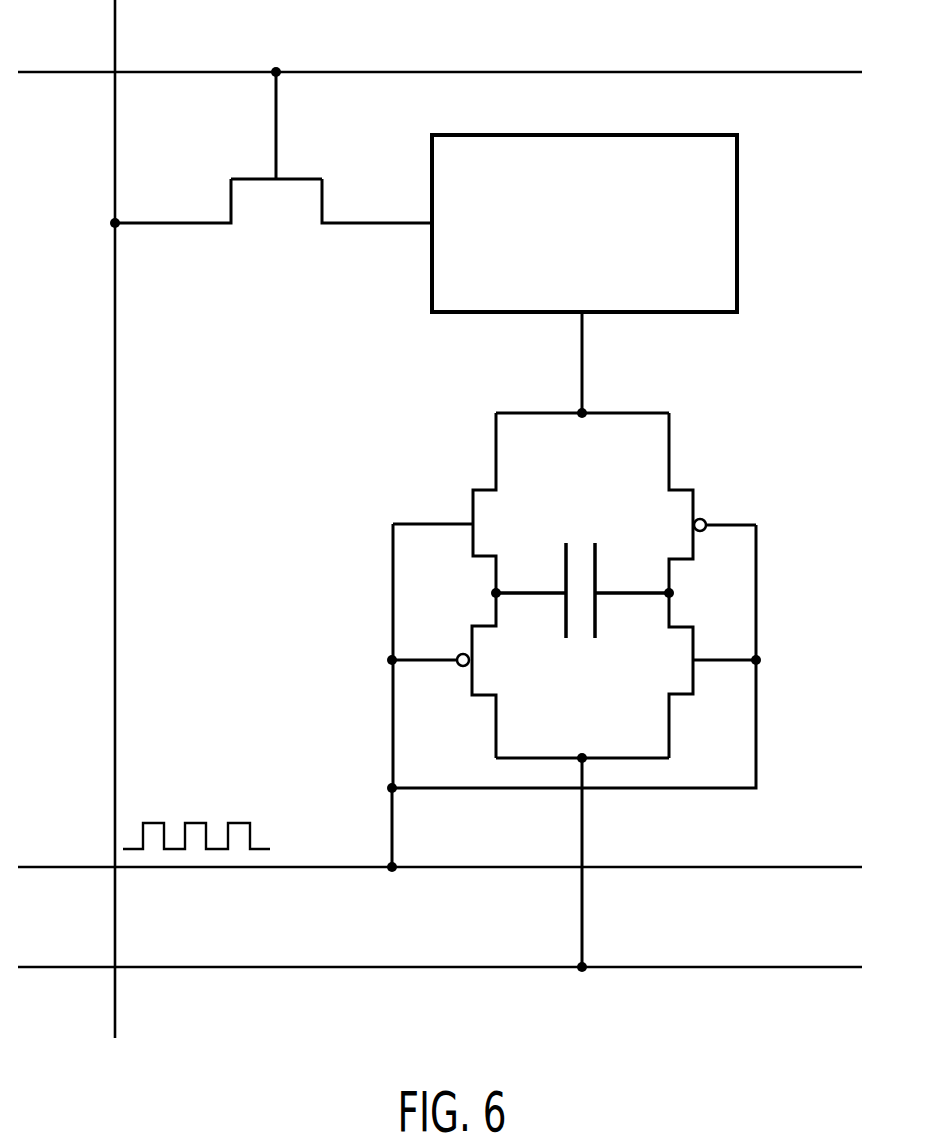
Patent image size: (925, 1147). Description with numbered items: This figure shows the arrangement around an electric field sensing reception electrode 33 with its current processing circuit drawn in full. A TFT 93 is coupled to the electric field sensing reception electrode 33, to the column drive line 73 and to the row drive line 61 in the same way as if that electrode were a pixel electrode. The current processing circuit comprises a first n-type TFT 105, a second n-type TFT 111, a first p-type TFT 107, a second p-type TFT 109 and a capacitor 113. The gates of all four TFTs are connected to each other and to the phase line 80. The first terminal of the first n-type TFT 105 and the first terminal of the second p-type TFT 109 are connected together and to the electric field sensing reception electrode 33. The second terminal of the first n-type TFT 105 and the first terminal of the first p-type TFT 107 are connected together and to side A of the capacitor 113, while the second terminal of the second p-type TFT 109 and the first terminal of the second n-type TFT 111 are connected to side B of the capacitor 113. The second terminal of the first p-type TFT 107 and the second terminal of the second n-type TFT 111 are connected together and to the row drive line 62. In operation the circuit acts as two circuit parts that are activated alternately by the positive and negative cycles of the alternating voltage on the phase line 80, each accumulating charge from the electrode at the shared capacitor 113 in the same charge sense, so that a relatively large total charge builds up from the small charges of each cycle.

The row drive line 61 is at (67, 72).
The column drive line 73 is at (117, 33).
The TFT 93 is at (247, 178).
The electric field sensing reception electrode 33 is at (722, 194).
The first n-type TFT 105 is at (473, 500).
The first p-type TFT 107 is at (472, 683).
The second p-type TFT 109 is at (693, 500).
The second n-type TFT 111 is at (693, 683).
The capacitor 113 is at (580, 560).
The phase line 80 is at (66, 866).
The row drive line 62 is at (66, 966).